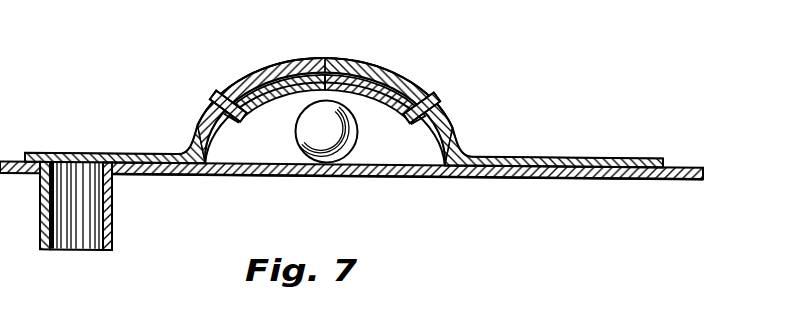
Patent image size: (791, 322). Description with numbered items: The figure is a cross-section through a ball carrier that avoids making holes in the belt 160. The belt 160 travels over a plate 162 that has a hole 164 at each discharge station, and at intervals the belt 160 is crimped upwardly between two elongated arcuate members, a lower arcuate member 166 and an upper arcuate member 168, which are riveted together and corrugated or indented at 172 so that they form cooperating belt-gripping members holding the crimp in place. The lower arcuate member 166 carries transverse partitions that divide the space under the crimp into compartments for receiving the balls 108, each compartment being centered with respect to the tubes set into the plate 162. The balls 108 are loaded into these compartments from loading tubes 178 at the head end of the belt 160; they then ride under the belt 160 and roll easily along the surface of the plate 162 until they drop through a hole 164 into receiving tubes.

The ball 108 is at (324, 120).
The belt 160 is at (566, 157).
The plate 162 is at (668, 180).
The hole 164 is at (97, 160).
The lower arcuate member 166 is at (426, 136).
The upper arcuate member 168 is at (439, 103).
The corrugation 172 is at (225, 99).
The loading tube 178 is at (113, 221).